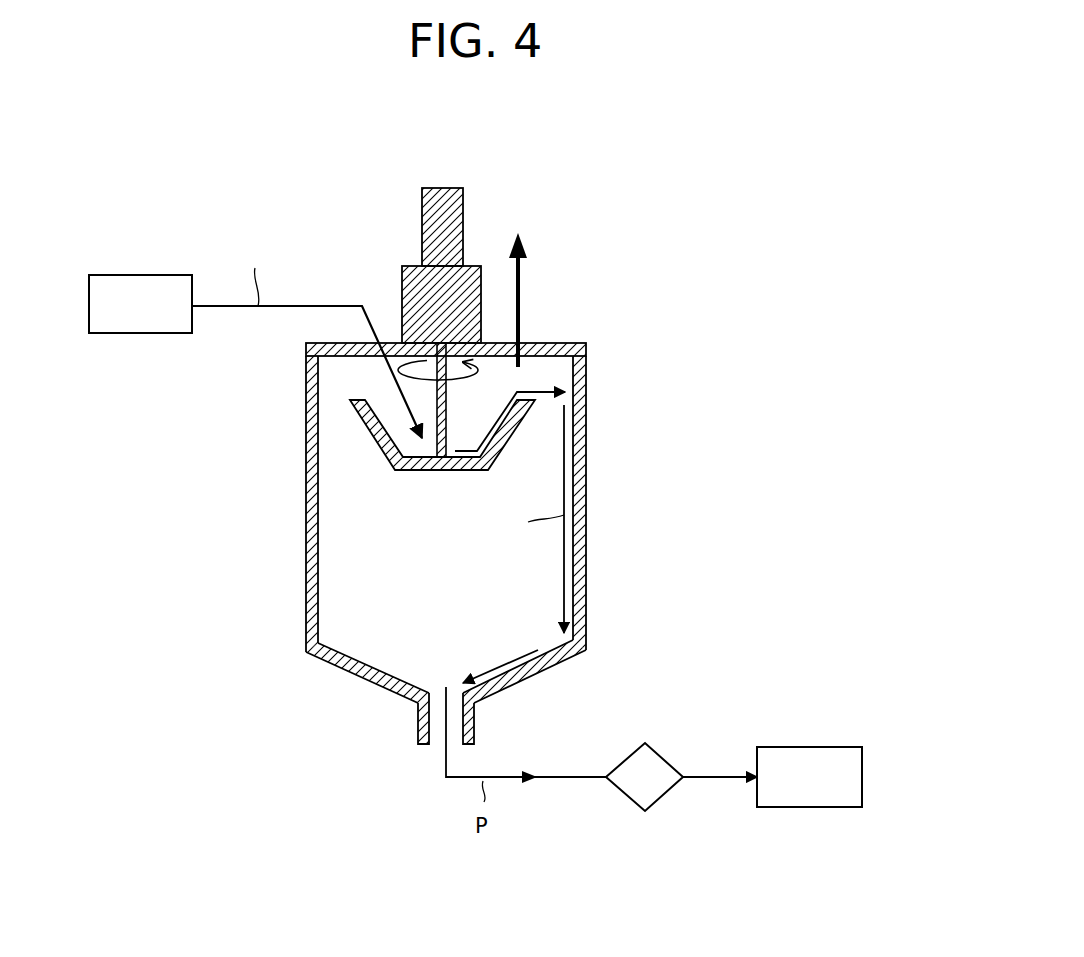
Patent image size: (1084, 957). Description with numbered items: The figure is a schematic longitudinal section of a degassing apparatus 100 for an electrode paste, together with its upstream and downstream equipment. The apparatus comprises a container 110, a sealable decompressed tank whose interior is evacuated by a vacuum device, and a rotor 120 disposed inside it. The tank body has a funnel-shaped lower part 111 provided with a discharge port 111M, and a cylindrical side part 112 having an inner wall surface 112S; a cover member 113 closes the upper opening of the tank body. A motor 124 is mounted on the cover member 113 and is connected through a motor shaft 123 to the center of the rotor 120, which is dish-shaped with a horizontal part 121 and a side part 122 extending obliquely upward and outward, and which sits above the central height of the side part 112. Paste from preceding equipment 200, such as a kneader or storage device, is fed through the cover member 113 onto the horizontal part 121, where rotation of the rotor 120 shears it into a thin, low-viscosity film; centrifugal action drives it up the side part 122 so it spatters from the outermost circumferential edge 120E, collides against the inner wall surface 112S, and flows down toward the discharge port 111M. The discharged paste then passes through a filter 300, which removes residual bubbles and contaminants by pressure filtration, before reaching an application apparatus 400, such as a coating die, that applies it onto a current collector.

The degassing apparatus 100 is at (580, 313).
The container 110 is at (661, 337).
The lower part 111 is at (525, 672).
The discharge port 111M is at (457, 749).
The side part 112 is at (586, 603).
The inner wall surface 112S is at (322, 550).
The cover member 113 is at (575, 343).
The rotor 120 is at (220, 453).
The outermost circumferential edge 120E is at (350, 400).
The horizontal part 121 is at (422, 470).
The side part 122 is at (363, 422).
The motor shaft 123 is at (458, 470).
The motor 124 is at (403, 252).
The preceding equipment 200 is at (172, 275).
The filter 300 is at (676, 762).
The application apparatus 400 is at (832, 747).